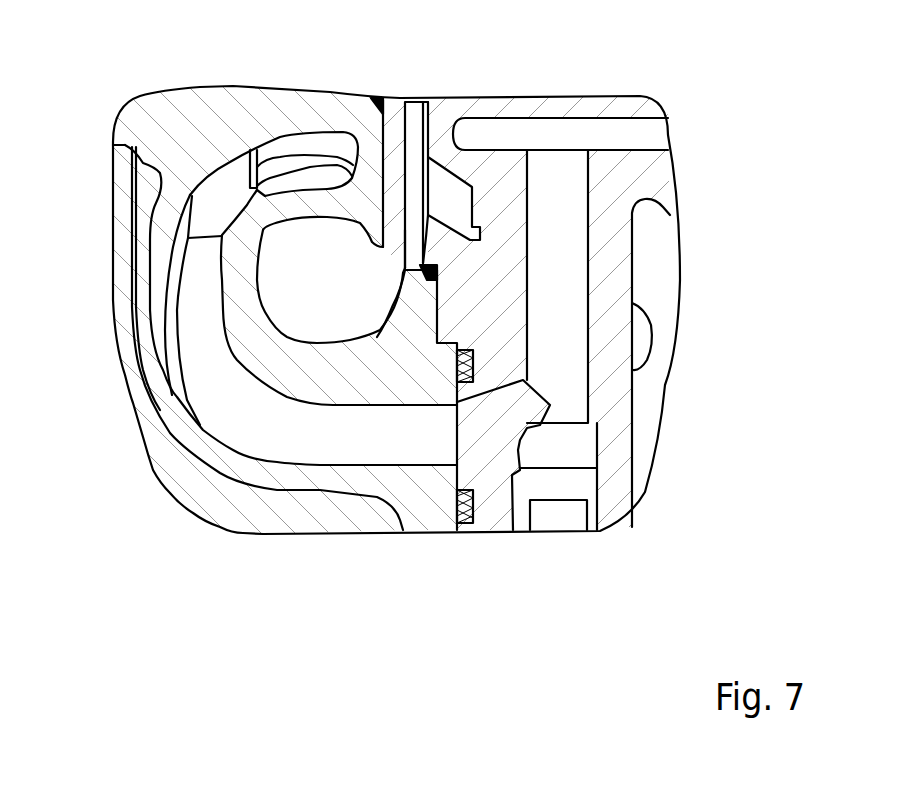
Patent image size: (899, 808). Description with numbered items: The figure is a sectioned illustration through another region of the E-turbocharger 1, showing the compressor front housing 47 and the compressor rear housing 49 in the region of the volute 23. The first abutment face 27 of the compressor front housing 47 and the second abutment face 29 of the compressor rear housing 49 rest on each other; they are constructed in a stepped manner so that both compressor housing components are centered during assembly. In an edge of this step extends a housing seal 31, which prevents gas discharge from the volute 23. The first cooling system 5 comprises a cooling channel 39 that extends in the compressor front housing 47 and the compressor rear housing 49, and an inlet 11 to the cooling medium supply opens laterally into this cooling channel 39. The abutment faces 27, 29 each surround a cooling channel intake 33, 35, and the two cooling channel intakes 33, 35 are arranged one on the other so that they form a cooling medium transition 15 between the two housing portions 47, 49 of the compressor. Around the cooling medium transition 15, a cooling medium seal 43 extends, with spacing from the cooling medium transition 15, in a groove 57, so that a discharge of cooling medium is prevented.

The coupling assembly 1 is at (277, 463).
The first cooling system 5 is at (533, 447).
The inlet 11 is at (558, 518).
The cooling medium transition 15 is at (457, 452).
The volute 23 is at (318, 278).
The first abutment face 27 is at (445, 305).
The second abutment face 29 is at (432, 323).
The housing seal 31 is at (430, 160).
The cooling channel intake 33 is at (433, 433).
The cooling channel intake 35 is at (487, 430).
The cooling channel 39 is at (200, 387).
The cooling medium seal 43 is at (475, 365).
The compressor front housing 47 is at (127, 317).
The compressor rear housing 49 is at (500, 522).
The groove 57 is at (467, 358).